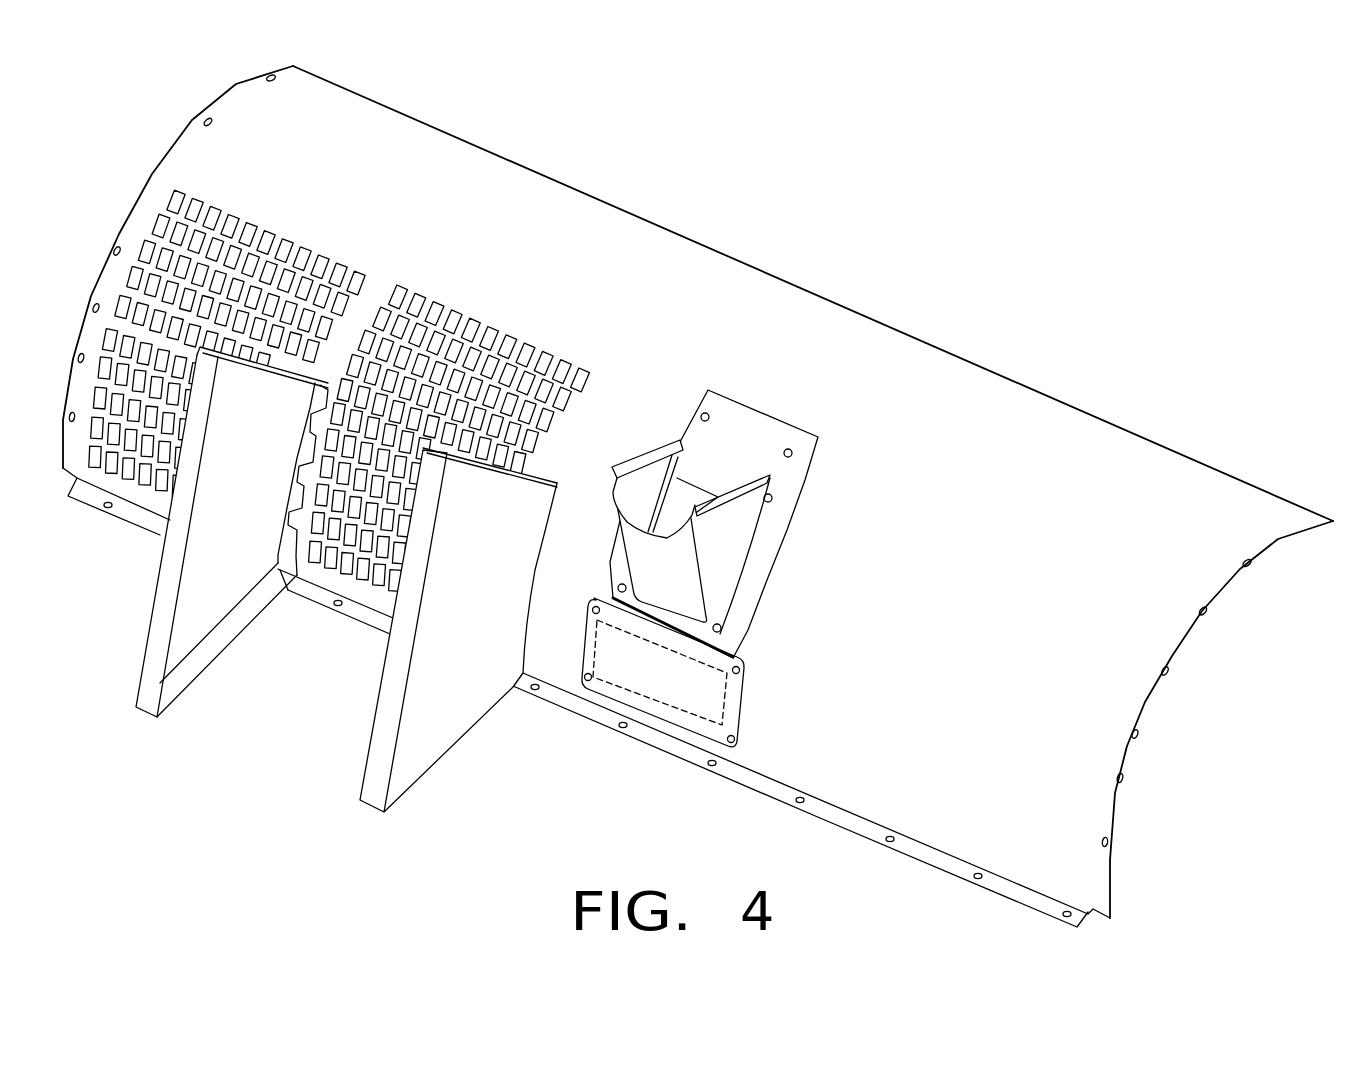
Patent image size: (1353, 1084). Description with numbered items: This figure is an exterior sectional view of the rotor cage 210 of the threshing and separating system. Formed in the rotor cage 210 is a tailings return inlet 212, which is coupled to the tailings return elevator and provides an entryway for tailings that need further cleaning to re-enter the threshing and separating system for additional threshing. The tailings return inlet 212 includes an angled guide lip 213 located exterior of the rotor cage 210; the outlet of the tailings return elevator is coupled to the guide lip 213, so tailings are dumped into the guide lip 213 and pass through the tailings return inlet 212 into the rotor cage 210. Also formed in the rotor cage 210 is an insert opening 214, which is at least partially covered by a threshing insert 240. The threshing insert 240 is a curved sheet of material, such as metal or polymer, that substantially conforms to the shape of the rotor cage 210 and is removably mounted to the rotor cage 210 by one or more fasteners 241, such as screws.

The rotor cage 210 is at (986, 368).
The tailings return inlet 212 is at (703, 482).
The angled guide lip 213 is at (633, 478).
The insert opening 214 is at (620, 620).
The threshing insert 240 is at (742, 648).
The fasteners 241 is at (740, 737).